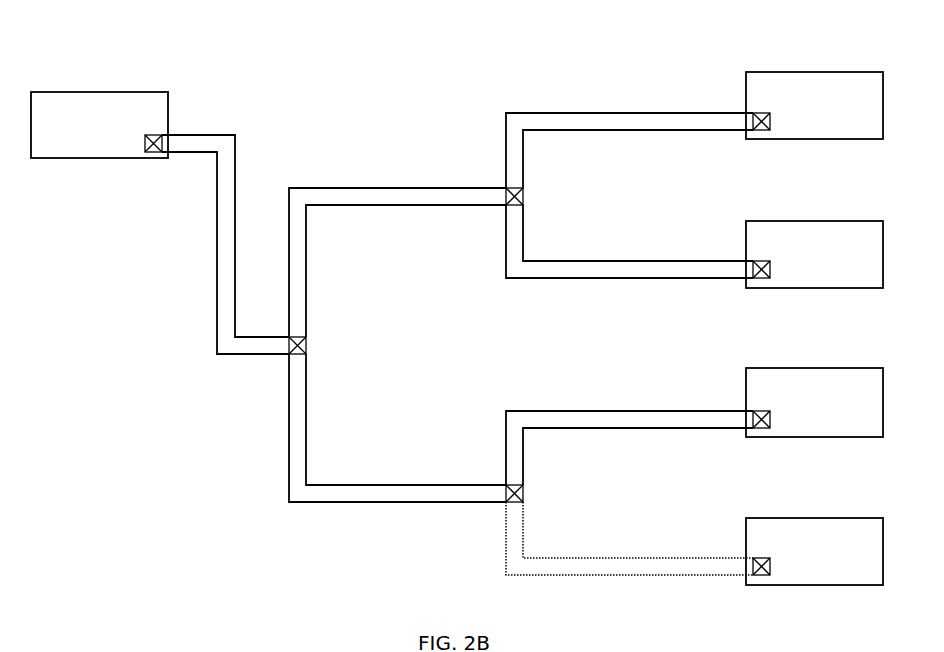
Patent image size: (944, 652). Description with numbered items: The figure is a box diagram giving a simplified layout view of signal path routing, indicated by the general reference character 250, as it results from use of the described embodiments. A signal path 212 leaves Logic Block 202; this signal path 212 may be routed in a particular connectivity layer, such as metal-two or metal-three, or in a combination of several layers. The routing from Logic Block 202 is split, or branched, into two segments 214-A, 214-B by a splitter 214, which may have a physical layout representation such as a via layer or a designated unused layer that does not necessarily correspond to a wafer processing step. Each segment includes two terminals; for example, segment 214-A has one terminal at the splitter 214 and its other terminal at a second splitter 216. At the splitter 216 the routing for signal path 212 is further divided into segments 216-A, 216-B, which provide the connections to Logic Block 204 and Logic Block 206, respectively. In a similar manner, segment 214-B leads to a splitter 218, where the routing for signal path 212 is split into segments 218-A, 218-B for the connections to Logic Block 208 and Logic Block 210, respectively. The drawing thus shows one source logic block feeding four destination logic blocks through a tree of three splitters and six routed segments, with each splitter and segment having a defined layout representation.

The simplified layout view of signal path routing 250 is at (378, 55).
The Logic Block 202 is at (99, 125).
The Logic Block 204 is at (814, 105).
The Logic Block 206 is at (814, 254).
The Logic Block 208 is at (814, 402).
The Logic Block 210 is at (814, 551).
The signal path 212 is at (190, 302).
The splitter 214 is at (307, 345).
The segment 214-A is at (368, 187).
The segment 214-B is at (398, 502).
The splitter 216 is at (523, 197).
The segment 216-A is at (635, 131).
The segment 216-B is at (653, 262).
The splitter 218 is at (523, 495).
The segment 218-A is at (632, 428).
The segment 218-B is at (626, 559).